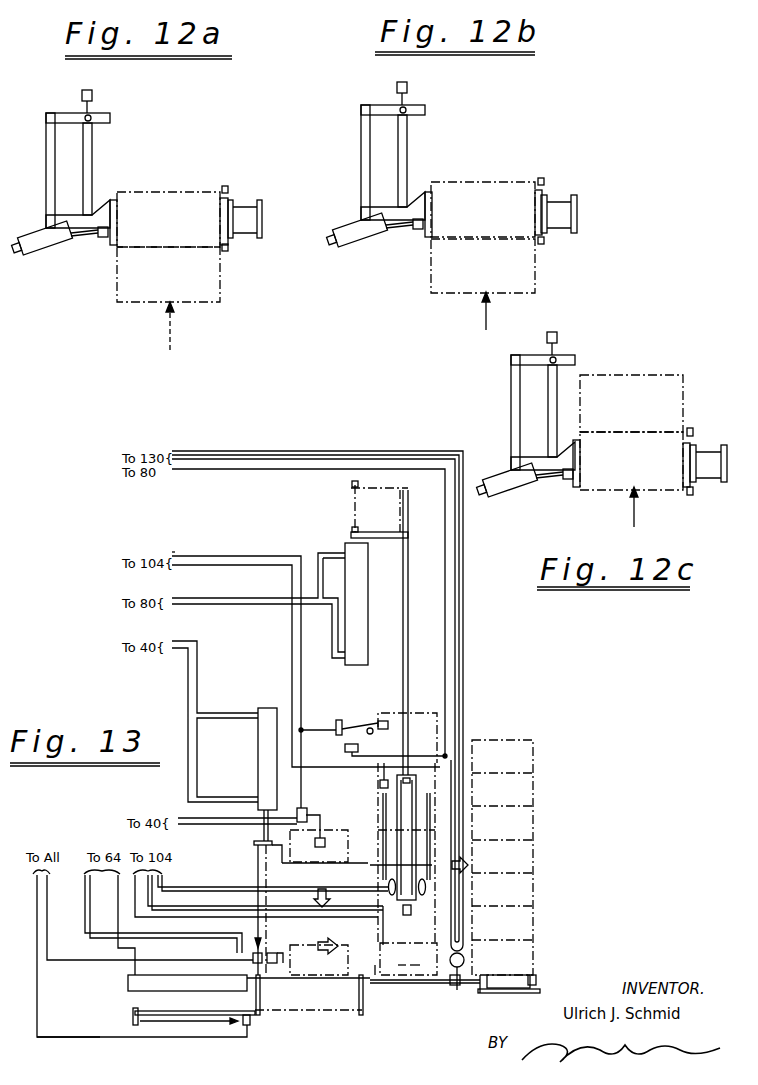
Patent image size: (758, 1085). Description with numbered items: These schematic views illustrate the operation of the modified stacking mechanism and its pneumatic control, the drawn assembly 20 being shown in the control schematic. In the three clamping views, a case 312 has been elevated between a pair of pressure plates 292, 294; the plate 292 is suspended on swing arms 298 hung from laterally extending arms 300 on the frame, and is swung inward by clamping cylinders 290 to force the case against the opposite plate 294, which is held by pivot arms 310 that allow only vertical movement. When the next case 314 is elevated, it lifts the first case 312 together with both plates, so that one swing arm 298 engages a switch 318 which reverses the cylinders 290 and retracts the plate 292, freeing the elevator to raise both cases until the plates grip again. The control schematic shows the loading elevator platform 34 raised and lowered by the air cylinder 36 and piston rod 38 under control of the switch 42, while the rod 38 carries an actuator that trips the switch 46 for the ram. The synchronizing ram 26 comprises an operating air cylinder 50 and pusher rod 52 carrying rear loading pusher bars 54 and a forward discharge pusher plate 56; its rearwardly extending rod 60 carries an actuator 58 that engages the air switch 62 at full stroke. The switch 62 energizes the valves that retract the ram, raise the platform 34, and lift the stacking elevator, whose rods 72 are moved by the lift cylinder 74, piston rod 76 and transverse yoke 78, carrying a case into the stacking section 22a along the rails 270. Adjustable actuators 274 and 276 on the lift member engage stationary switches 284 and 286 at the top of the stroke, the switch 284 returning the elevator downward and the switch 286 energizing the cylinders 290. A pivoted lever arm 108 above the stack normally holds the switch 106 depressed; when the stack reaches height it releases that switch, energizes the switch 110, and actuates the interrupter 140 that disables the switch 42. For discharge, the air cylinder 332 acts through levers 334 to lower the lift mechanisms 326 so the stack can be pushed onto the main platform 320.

In FIG. 13, the valve assembly 20 is at (315, 811).
In FIG. 13, the stacking section 22a is at (332, 544).
In FIG. 13, the synchronizing ram 26 is at (148, 1039).
In FIG. 13, the platform 34 is at (340, 864).
In FIG. 13, the air cylinder 36 is at (267, 750).
In FIG. 13, the piston rod 38 is at (256, 832).
In FIG. 13, the switch 42 is at (322, 838).
In FIG. 13, the switch 46 is at (253, 958).
In FIG. 13, the operating air cylinder 50 is at (180, 985).
In FIG. 13, the pusher rod 52 is at (320, 980).
In FIG. 13, the loading pusher bars 54 is at (282, 956).
In FIG. 13, the discharge pusher plate 56 is at (375, 965).
In FIG. 13, the actuator 58 is at (133, 1020).
In FIG. 13, the rearwardly extending rod 60 is at (152, 1012).
In FIG. 13, the air switch 62 is at (250, 1022).
In FIG. 13, the vertically extending rods 72 is at (408, 655).
In FIG. 13, the air cylinder 74 is at (362, 596).
In FIG. 13, the piston rod 76 is at (352, 511).
In FIG. 13, the transverse yoke 78 is at (382, 522).
In FIG. 13, the switch 106 is at (339, 720).
In FIG. 13, the pivoted lever arm 108 is at (374, 720).
In FIG. 13, the switch 110 is at (345, 750).
In FIG. 13, the interrupter 140 is at (300, 808).
In FIG. 13, the rails 270 is at (432, 985).
In FIG. 13, the adjustable actuator 274 is at (410, 948).
In FIG. 13, the adjustable actuator 276 is at (405, 968).
In FIG. 13, the switch 284 is at (411, 912).
In FIG. 13, the switch 286 is at (403, 923).
In FIG. 12A, the clamping cylinders 290 is at (40, 250).
In FIG. 12B, the clamping cylinders 290 is at (375, 240).
In FIG. 12C, the clamping cylinders 290 is at (510, 497).
In FIG. 13, the clamping cylinders 290 is at (385, 892).
In FIG. 12A, the pressure plate 292 is at (117, 224).
In FIG. 12B, the pressure plate 292 is at (432, 218).
In FIG. 12C, the pressure plate 292 is at (580, 465).
In FIG. 12A, the pressure plate 294 is at (220, 222).
In FIG. 12B, the pressure plate 294 is at (535, 214).
In FIG. 12A, the swing arms 298 is at (92, 165).
In FIG. 12B, the swing arms 298 is at (372, 133).
In FIG. 12A, the laterally extending arms 300 is at (108, 119).
In FIG. 12B, the pivot arms 310 is at (560, 193).
In FIG. 12A, the case 312 is at (163, 192).
In FIG. 12B, the case 312 is at (470, 182).
In FIG. 12C, the case 312 is at (650, 375).
In FIG. 12A, the case 314 is at (128, 303).
In FIG. 12B, the case 314 is at (431, 272).
In FIG. 12C, the case 314 is at (658, 490).
In FIG. 12A, the switch 318 is at (82, 94).
In FIG. 13, the switch 318 is at (380, 786).
In FIG. 13, the main platform 320 is at (512, 976).
In FIG. 13, the lift mechanisms 326 is at (537, 981).
In FIG. 13, the air cylinder 332 is at (465, 958).
In FIG. 13, the levers 334 is at (455, 985).